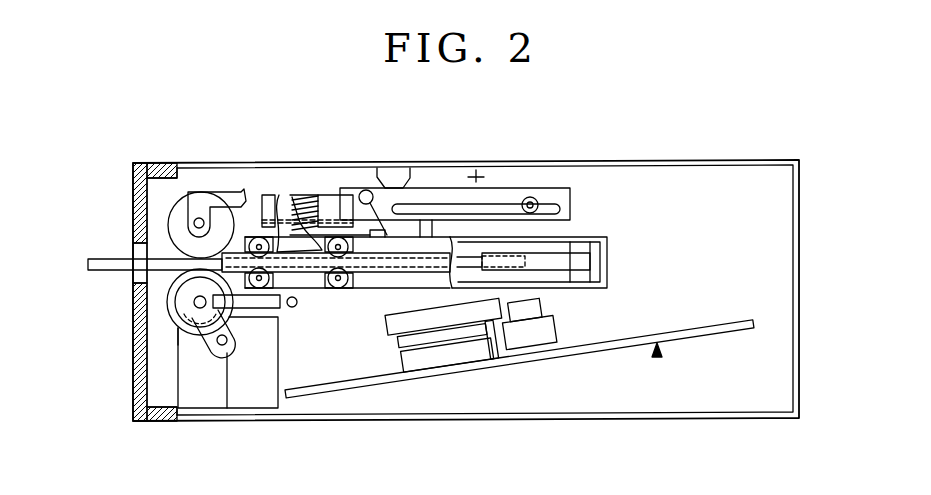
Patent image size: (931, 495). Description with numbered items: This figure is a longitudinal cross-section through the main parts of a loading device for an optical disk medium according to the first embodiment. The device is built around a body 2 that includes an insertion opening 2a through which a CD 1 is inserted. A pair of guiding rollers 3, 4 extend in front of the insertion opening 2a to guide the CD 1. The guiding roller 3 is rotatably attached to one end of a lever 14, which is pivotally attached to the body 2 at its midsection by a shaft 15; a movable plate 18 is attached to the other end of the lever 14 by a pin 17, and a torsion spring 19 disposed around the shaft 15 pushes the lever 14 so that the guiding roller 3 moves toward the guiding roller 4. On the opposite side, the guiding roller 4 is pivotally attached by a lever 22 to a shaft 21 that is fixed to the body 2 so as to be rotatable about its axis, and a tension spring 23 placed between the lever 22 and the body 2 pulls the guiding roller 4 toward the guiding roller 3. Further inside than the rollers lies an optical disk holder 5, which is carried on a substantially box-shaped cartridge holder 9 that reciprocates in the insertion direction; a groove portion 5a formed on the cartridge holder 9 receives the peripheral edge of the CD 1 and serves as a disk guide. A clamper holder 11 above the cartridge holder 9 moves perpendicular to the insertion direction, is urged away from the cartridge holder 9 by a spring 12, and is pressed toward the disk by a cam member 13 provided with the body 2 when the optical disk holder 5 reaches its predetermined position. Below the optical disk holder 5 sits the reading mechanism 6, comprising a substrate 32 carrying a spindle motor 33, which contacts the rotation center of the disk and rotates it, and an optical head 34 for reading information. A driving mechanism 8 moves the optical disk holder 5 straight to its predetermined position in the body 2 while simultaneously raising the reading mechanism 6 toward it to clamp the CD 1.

The CD 1 is at (107, 270).
The body 2 is at (778, 418).
The insertion opening 2a is at (132, 250).
The guiding roller 3 is at (170, 217).
The guiding roller 4 is at (177, 312).
The optical disk holder 5 is at (300, 272).
The groove portion 5a is at (332, 288).
The reading mechanism 6 is at (657, 357).
The driving mechanism 8 is at (250, 400).
The cartridge holder 9 is at (605, 236).
The clamper holder 11 is at (280, 193).
The spring 12 is at (325, 193).
The cam member 13 is at (476, 177).
The lever 14 is at (507, 193).
The shaft 15 is at (364, 190).
The pin 17 is at (543, 193).
The movable plate 18 is at (573, 202).
The torsion spring 19 is at (403, 188).
The shaft 21 is at (213, 352).
The lever 22 is at (183, 357).
The tension spring 23 is at (257, 308).
The substrate 32 is at (715, 337).
The spindle motor 33 is at (467, 357).
The optical head 34 is at (547, 333).